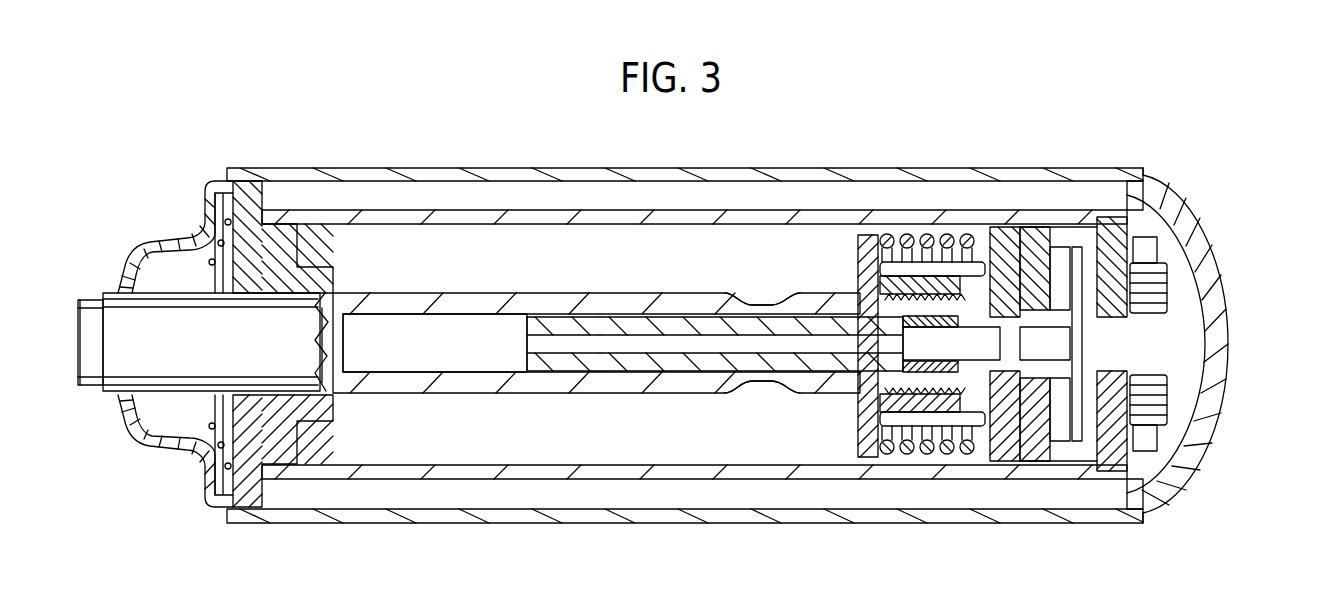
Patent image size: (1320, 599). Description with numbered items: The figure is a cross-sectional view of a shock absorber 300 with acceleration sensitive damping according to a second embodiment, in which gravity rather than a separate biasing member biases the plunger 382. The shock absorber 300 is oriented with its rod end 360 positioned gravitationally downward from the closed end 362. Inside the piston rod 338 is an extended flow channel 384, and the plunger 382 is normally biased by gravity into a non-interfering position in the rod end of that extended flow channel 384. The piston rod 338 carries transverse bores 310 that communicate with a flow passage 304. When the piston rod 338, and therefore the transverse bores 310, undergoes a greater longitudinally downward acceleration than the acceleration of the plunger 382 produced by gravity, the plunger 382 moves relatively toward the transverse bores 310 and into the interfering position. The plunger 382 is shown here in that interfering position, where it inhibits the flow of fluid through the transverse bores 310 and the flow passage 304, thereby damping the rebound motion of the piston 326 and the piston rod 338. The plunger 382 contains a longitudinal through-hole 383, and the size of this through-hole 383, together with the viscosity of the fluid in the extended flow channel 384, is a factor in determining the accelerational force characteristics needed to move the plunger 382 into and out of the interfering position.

The shock absorber 300 is at (440, 131).
The piston rod 338 is at (360, 293).
The extended flow channel 384 is at (424, 333).
The longitudinal through-hole 383 is at (527, 347).
The plunger 382 is at (633, 320).
The transverse bores 310 is at (763, 385).
The flow passage 304 is at (932, 360).
The piston 326 is at (1008, 443).
The rod end 360 is at (190, 230).
The closed end 362 is at (1213, 437).